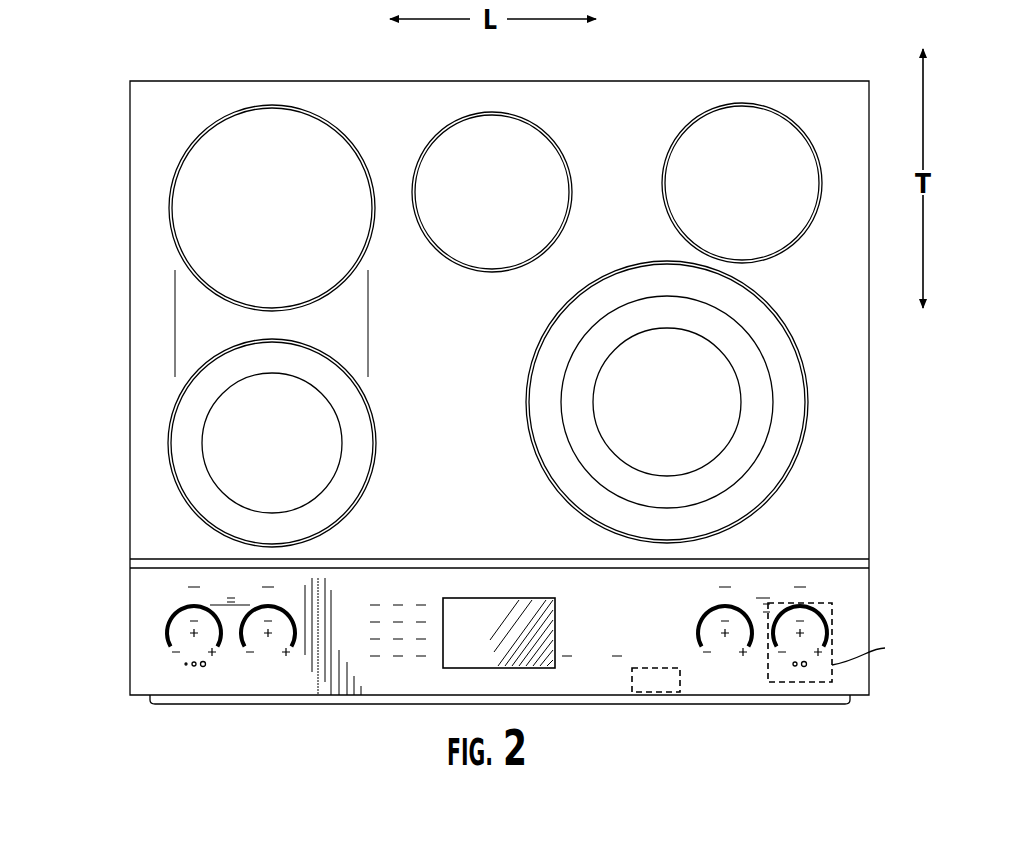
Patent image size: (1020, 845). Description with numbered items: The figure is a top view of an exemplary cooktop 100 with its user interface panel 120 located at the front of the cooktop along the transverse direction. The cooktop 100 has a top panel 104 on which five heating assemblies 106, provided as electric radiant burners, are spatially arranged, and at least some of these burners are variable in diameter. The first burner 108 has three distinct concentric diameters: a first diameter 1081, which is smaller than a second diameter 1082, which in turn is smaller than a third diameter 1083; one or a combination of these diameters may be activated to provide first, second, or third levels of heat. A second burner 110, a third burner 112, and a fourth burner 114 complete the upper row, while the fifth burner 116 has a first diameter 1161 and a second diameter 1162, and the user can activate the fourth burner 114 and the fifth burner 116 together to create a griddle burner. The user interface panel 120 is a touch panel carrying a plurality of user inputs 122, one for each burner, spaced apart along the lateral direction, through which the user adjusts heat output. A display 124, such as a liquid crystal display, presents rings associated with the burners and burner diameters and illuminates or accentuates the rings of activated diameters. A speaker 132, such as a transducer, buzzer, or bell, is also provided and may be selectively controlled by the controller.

The cooktop 100 is at (130, 320).
The top panel 104 is at (147, 213).
The heating assemblies 106 is at (322, 104).
The first burner 108 is at (730, 400).
The first diameter 1081 is at (741, 404).
The second diameter 1082 is at (773, 393).
The third diameter 1083 is at (788, 326).
The second burner 110 is at (795, 121).
The third burner 112 is at (521, 116).
The fourth burner 114 is at (246, 107).
The fifth burner 116 is at (196, 443).
The first diameter 1161 is at (203, 451).
The second diameter 1162 is at (172, 417).
The user interface panel 120 is at (130, 630).
The user inputs 122 is at (186, 678).
The display 124 is at (455, 652).
The speaker 132 is at (660, 693).